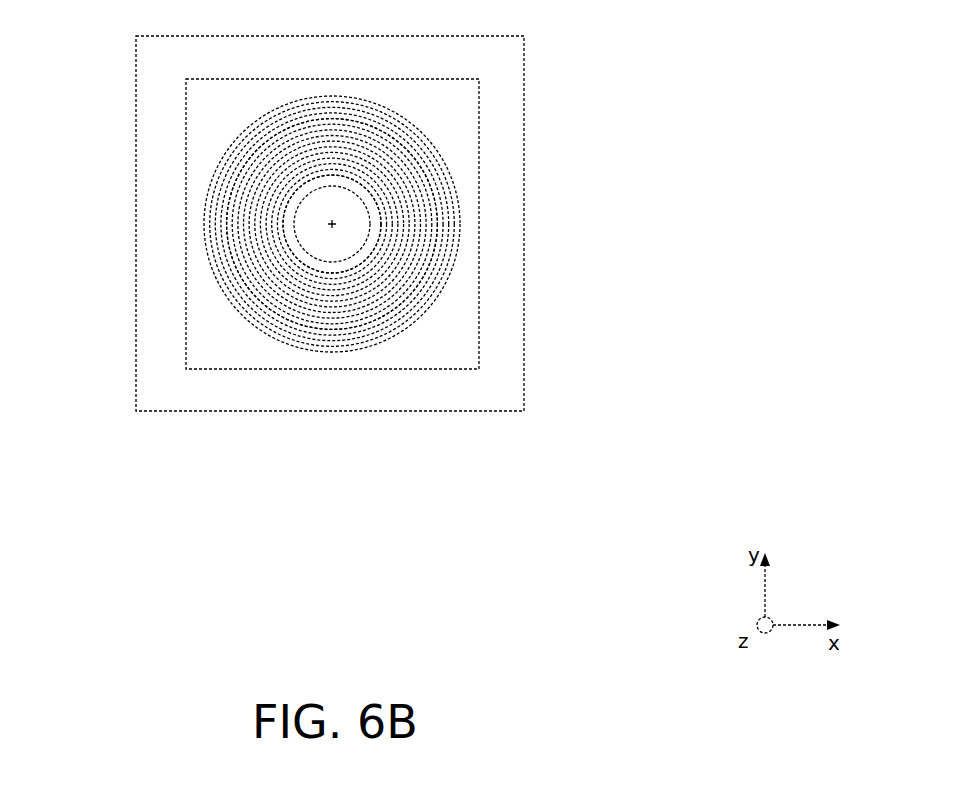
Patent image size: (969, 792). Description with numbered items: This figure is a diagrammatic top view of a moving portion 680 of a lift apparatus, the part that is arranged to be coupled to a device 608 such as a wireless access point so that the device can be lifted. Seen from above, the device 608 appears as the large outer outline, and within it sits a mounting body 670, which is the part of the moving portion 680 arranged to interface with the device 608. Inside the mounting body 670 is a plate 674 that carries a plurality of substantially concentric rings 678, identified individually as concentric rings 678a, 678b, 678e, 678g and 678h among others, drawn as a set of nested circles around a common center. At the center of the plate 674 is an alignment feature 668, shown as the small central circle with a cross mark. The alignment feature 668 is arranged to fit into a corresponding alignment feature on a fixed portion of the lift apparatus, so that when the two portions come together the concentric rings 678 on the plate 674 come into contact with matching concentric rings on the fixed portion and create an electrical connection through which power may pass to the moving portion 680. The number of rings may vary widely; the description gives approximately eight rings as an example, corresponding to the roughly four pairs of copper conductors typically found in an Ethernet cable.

The device 608 is at (508, 36).
The mounting body 670 is at (480, 86).
The plate 674 is at (423, 133).
The alignment feature 668 is at (348, 223).
The concentric ring 678 is at (437, 250).
The concentric ring 678a is at (325, 277).
The concentric ring 678b is at (355, 278).
The concentric ring 678e is at (440, 265).
The concentric ring 678g is at (438, 190).
The concentric ring 678h is at (443, 163).
The moving portion 680 is at (172, 126).